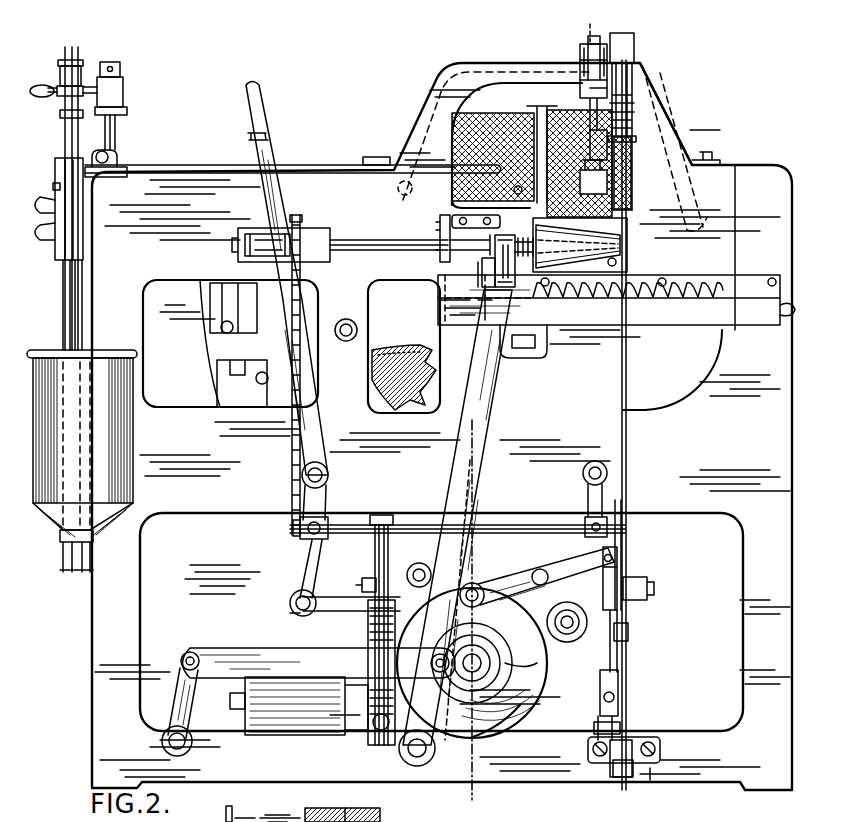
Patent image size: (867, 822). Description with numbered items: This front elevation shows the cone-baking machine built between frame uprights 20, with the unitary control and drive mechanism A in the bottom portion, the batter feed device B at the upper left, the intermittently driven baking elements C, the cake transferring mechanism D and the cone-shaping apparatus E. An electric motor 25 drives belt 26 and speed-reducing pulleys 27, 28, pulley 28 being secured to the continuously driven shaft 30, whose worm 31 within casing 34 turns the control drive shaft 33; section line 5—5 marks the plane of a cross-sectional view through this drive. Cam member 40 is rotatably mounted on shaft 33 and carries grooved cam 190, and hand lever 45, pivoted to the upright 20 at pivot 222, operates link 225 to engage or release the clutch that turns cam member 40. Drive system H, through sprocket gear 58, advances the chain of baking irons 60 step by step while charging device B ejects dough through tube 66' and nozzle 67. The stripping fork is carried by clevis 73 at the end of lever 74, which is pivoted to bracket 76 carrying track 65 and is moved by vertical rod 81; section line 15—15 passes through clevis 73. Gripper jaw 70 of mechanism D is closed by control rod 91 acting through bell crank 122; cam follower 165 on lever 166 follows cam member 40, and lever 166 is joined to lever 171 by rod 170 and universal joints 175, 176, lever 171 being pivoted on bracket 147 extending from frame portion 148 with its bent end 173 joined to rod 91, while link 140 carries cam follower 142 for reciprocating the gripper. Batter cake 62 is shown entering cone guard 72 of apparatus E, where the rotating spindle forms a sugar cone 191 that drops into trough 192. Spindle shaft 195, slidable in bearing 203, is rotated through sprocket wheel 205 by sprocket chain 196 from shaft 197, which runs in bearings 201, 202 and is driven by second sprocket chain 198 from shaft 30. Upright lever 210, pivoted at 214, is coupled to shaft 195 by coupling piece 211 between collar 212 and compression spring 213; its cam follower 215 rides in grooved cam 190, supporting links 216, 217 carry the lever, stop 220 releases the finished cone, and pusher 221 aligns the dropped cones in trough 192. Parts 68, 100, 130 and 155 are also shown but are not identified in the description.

The section line 15 is at (588, 22).
The frame upright 20 is at (748, 172).
The electric motor 25 is at (294, 704).
The belt 26 is at (370, 633).
The pulley 27 is at (372, 728).
The pulley 28 is at (365, 630).
The continuously driven shaft 30 is at (362, 586).
The worm 31 is at (360, 807).
The control drive shaft 33 is at (490, 655).
The casing 34 is at (312, 814).
The cam member 40 is at (478, 734).
The hand lever 45 is at (256, 100).
The sprocket gear 58 is at (428, 338).
The baking iron 60 is at (508, 154).
The batter cake 62 is at (627, 214).
The track 65 is at (470, 70).
The tube 66' is at (293, 160).
The nozzle 67 is at (460, 187).
The guide 68 is at (580, 80).
The gripper jaw 70 is at (593, 177).
The cone guard 72 is at (536, 221).
The clevis 73 is at (582, 54).
The lever 74 is at (597, 40).
The bracket 76 is at (634, 42).
The vertical rod 81 is at (227, 806).
The control rod 91 is at (633, 66).
The clamp 100 is at (636, 139).
The bell crank 122 is at (634, 106).
The rack teeth 130 is at (571, 280).
The link 140 is at (280, 810).
The cam follower 142 is at (225, 815).
The bracket 147 is at (630, 740).
The frame portion 148 is at (651, 782).
The plate 155 is at (270, 809).
The cam follower 165 is at (465, 590).
The lever 166 is at (496, 588).
The rod 170 is at (612, 656).
The lever 171 is at (596, 718).
The lever end 173 is at (622, 780).
The universal joint 175 is at (598, 568).
The universal joint 176 is at (619, 696).
The grooved cam 190 is at (505, 665).
The sugar cone 191 is at (708, 287).
The trough 192 is at (742, 325).
The spindle shaft 195 is at (352, 247).
The sprocket chain 196 is at (302, 270).
The shaft 197 is at (410, 523).
The second sprocket chain 198 is at (623, 548).
The bearing 201 is at (331, 522).
The bearing 202 is at (590, 488).
The bearing 203 is at (315, 240).
The sprocket wheel 205 is at (297, 222).
The upright lever 210 is at (482, 468).
The coupling piece 211 is at (480, 262).
The collar 212 is at (492, 240).
The compression spring 213 is at (533, 283).
The pivot 214 is at (405, 754).
The cam follower 215 is at (430, 663).
The supporting link 216 is at (254, 657).
The supporting link 217 is at (190, 703).
The stop 220 is at (440, 229).
The pusher 221 is at (536, 354).
The pivot 222 is at (327, 476).
The link 225 is at (345, 606).
The section line 5 is at (478, 548).
The control and drive mechanism A is at (311, 640).
The batter feed device B is at (50, 299).
The baking elements C is at (430, 143).
The batter cake transferring mechanism D is at (634, 127).
The cone-shaping apparatus E is at (508, 236).
The drive system H is at (428, 376).